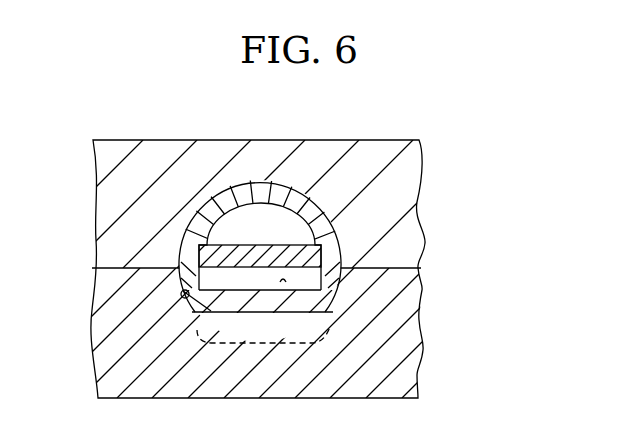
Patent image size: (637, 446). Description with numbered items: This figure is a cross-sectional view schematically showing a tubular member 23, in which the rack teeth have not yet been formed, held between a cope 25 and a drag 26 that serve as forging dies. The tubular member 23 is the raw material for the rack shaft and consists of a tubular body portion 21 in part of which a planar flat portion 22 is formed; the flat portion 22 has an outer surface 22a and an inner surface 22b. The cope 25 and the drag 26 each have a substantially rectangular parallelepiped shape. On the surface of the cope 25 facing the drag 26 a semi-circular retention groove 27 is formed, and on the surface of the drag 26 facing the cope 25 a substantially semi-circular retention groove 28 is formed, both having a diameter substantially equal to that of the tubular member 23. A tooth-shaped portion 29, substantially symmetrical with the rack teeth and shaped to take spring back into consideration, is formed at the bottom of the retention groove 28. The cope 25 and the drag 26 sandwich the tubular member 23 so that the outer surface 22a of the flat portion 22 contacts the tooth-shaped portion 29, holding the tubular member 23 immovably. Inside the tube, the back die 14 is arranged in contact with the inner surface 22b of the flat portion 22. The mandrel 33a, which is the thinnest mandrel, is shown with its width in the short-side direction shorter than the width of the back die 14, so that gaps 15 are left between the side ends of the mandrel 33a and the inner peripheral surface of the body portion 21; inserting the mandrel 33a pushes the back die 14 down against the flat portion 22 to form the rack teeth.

The back die 14 is at (338, 246).
The gap 15 is at (310, 283).
The body portion 21 is at (219, 204).
The flat portion 22 is at (243, 303).
The outer surface 22a is at (330, 328).
The inner surface 22b is at (284, 282).
The tubular member 23 is at (256, 182).
The cope 25 is at (100, 152).
The drag 26 is at (106, 358).
The retention groove 27 is at (180, 241).
The retention groove 28 is at (181, 294).
The tooth-shaped portion 29 is at (197, 313).
The mandrel 33a is at (276, 220).